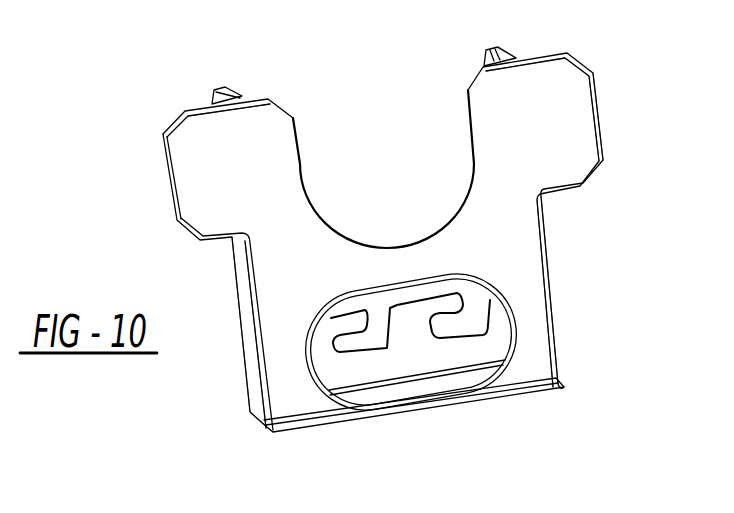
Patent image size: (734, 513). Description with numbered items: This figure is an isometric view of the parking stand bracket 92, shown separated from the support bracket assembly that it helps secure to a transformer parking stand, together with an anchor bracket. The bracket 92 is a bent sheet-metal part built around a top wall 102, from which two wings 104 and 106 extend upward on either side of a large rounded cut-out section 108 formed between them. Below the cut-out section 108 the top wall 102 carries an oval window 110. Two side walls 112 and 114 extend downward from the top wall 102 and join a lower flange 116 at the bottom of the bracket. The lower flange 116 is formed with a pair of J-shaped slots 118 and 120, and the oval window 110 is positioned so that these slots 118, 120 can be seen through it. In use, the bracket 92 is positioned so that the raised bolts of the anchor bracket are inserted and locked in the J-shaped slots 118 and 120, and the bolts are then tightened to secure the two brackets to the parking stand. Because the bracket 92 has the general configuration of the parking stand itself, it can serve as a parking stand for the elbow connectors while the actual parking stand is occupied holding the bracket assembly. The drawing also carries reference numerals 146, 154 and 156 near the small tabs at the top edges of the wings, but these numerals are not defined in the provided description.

The parking stand bracket 92 is at (580, 32).
The top wall 102 is at (520, 248).
The wing 104 is at (222, 172).
The wing 106 is at (557, 102).
The cut-out section 108 is at (307, 200).
The oval window 110 is at (503, 347).
The side wall 112 is at (258, 342).
The side wall 114 is at (566, 332).
The lower flange 116 is at (403, 365).
The J-shaped slot 118 is at (328, 346).
The J-shaped slot 120 is at (432, 327).
The tab 146 is at (253, 52).
The protrusion 154 is at (518, 29).
The protrusion 156 is at (399, 0).